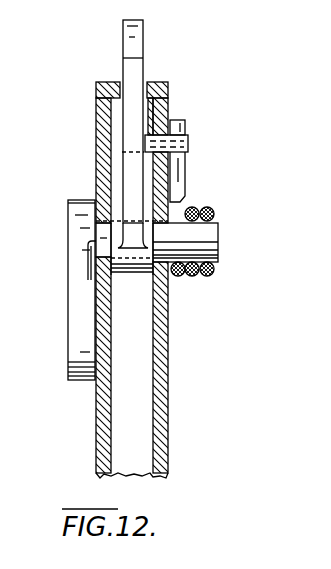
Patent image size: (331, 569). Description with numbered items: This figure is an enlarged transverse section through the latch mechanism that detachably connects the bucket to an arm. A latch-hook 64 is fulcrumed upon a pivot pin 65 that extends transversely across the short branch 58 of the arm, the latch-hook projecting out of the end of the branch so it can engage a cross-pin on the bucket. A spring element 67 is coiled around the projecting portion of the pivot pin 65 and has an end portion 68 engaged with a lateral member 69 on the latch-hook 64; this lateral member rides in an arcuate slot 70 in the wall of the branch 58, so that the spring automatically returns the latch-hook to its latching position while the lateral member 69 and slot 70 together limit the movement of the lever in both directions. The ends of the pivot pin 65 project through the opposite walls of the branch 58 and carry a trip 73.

The short branch 58 is at (168, 398).
The latch-hook 64 is at (138, 32).
The pivot pin 65 is at (210, 232).
The spring element 67 is at (207, 276).
The spring end portion 68 is at (186, 162).
The lateral member 69 is at (188, 143).
The slot 70 is at (158, 133).
The trip 73 is at (80, 332).